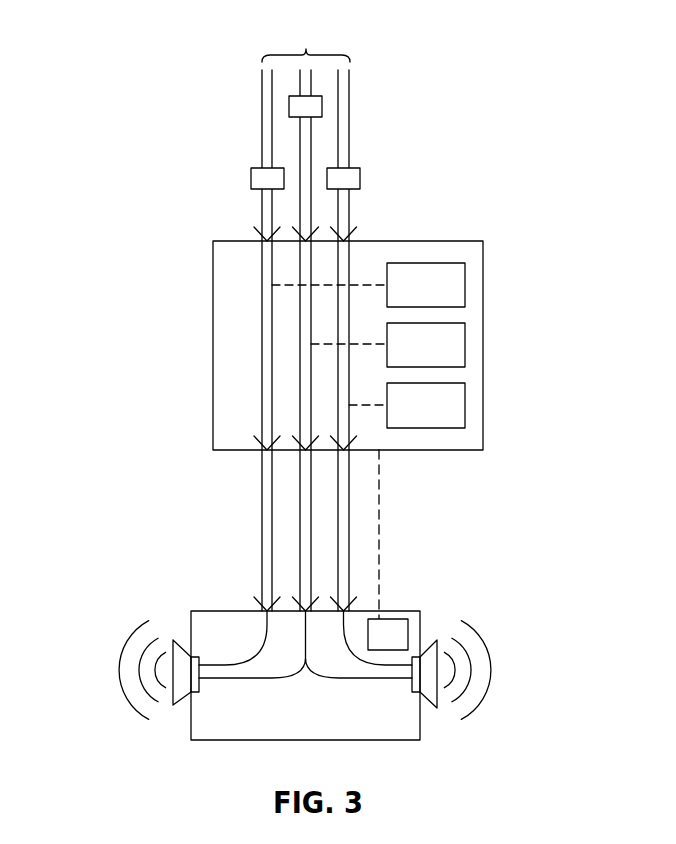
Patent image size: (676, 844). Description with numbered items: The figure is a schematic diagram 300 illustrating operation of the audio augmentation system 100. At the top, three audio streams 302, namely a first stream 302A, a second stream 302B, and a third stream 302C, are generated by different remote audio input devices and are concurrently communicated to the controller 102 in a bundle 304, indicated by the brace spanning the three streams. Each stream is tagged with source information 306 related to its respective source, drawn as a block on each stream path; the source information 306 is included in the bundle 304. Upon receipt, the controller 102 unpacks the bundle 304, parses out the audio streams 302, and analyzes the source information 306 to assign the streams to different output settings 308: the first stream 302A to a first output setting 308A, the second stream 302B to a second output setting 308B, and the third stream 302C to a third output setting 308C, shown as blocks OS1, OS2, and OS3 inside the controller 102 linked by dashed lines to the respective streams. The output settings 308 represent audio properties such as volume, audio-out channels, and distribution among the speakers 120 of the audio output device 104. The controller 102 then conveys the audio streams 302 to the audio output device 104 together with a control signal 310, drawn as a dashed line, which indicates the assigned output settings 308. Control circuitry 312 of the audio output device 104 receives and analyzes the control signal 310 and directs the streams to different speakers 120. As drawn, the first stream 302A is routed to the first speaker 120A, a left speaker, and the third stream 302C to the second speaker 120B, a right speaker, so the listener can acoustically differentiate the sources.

The schematic diagram 300 is at (124, 88).
The audio augmentation system 100 is at (144, 280).
The controller 102 is at (470, 241).
The audio output device 104 is at (421, 622).
The speakers 120 is at (170, 640).
The first speaker 120A is at (190, 694).
The second speaker 120B is at (421, 694).
The audio streams 302 is at (262, 107).
The first audio stream 302A is at (262, 147).
The second audio stream 302B is at (311, 145).
The third audio stream 302C is at (349, 143).
The bundle 304 is at (306, 37).
The source information 306 is at (251, 181).
The output settings 308 is at (474, 256).
The first output setting 308A is at (465, 285).
The second output setting 308B is at (465, 343).
The third output setting 308C is at (465, 403).
The control signal 310 is at (380, 488).
The control circuitry 312 is at (398, 619).